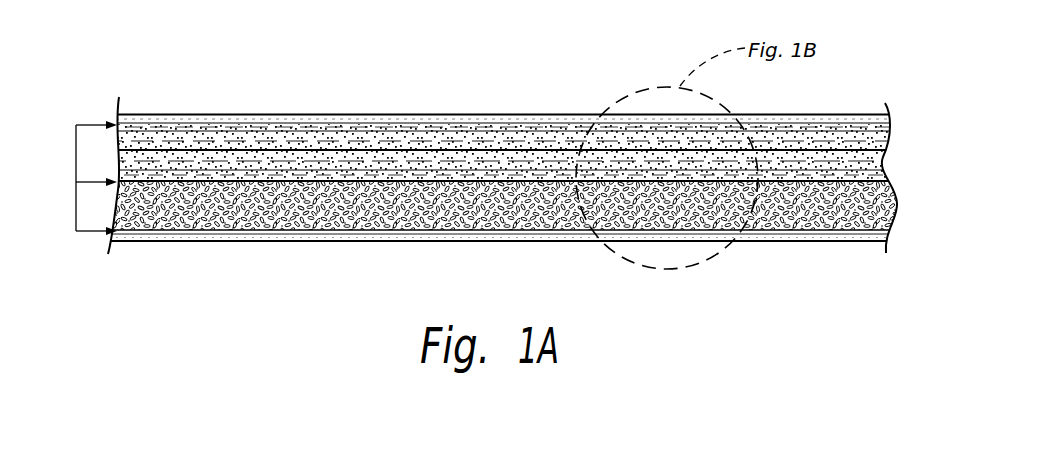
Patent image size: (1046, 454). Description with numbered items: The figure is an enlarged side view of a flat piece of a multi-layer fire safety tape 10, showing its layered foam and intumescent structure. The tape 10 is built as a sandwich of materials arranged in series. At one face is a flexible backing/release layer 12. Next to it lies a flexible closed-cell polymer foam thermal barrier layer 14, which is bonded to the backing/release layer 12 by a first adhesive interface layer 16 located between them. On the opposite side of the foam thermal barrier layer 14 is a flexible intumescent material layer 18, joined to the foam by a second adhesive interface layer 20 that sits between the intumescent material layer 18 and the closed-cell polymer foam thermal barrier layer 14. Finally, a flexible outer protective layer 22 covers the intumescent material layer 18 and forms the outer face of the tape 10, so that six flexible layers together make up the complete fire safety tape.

The multi-layer fire safety tape 10 is at (431, 40).
The flexible backing/release layer 12 is at (166, 237).
The flexible closed-cell polymer foam thermal barrier layer 14 is at (76, 212).
The first adhesive interface layer 16 is at (192, 230).
The flexible intumescent material layer 18 is at (75, 155).
The second adhesive interface layer 20 is at (282, 183).
The flexible outer protective layer 22 is at (229, 127).